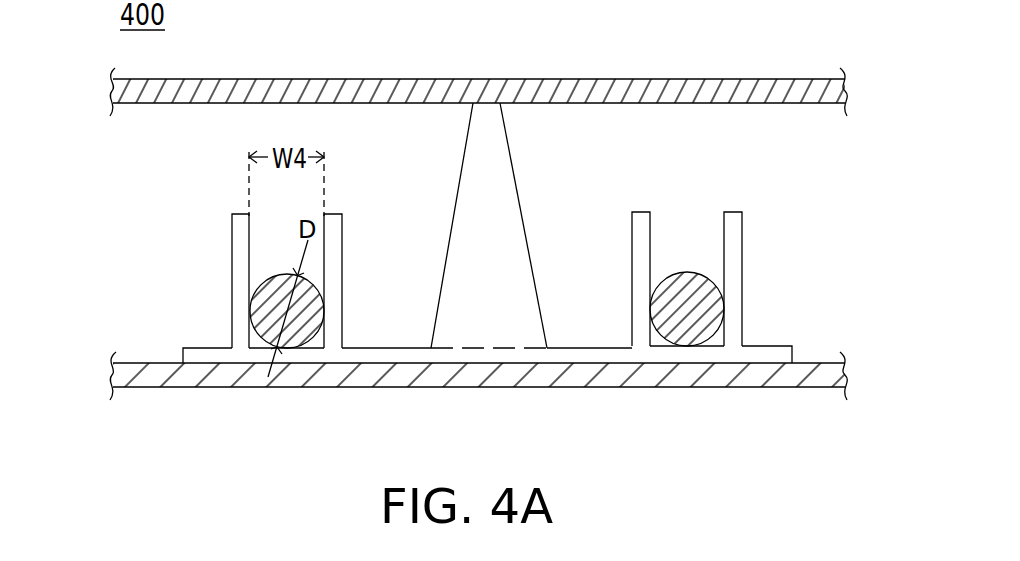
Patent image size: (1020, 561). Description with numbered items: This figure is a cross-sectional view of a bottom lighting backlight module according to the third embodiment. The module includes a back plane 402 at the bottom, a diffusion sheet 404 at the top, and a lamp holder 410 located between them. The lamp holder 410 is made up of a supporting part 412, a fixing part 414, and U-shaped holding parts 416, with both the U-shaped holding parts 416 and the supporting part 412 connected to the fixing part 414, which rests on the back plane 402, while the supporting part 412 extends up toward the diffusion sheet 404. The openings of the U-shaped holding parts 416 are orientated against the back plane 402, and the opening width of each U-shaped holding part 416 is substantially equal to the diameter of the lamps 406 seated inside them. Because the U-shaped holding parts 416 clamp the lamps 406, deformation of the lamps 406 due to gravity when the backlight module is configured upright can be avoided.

The back plane 402 is at (755, 387).
The diffusion sheet 404 is at (710, 78).
The lamps 406 is at (253, 304).
The lamp holder 410 is at (155, 258).
The supporting part 412 is at (523, 221).
The fixing part 414 is at (763, 345).
The U-shaped holding parts 416 is at (238, 214).